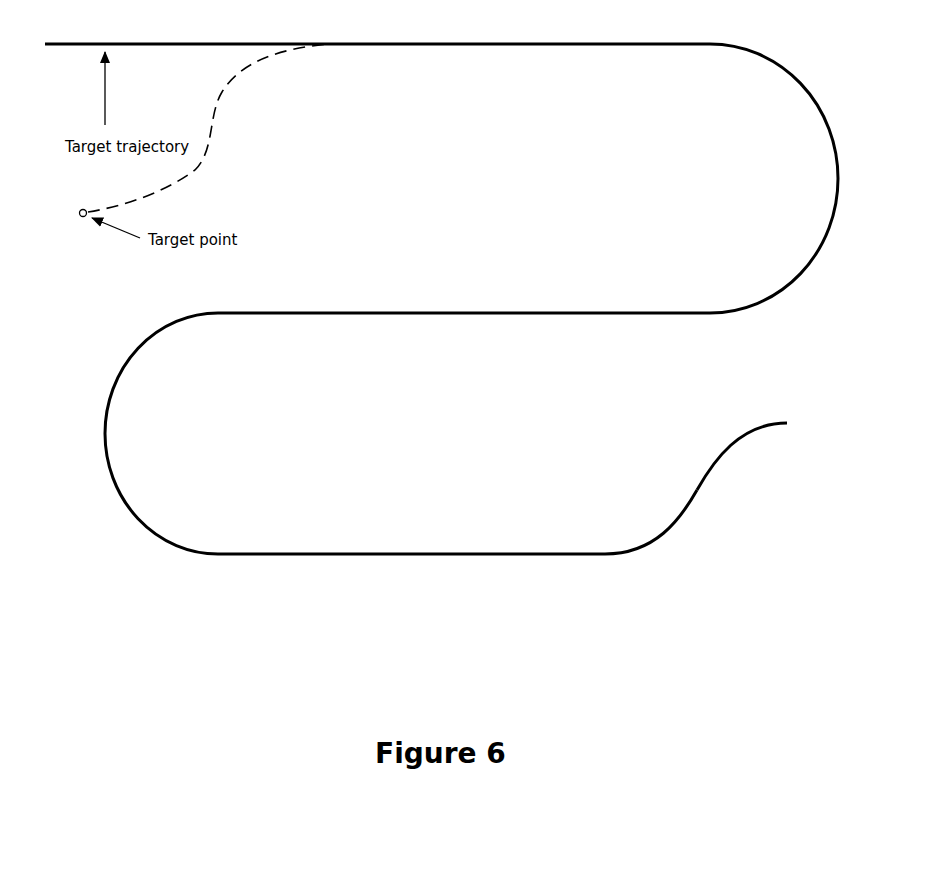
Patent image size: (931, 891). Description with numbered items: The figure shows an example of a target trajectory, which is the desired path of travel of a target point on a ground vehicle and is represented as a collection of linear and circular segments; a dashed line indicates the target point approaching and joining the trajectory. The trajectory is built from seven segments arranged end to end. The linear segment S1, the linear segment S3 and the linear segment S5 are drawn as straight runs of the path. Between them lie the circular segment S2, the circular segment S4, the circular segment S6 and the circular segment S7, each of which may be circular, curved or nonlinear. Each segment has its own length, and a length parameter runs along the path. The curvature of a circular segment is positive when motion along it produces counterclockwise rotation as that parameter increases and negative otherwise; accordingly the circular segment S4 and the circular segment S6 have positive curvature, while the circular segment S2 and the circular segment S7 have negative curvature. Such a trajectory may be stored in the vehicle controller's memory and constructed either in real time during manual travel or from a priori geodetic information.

The linear segment S1 is at (537, 47).
The circular segment S2 is at (831, 148).
The linear segment S3 is at (432, 310).
The circular segment S4 is at (125, 389).
The linear segment S5 is at (372, 550).
The circular segment S6 is at (661, 528).
The circular segment S7 is at (724, 460).